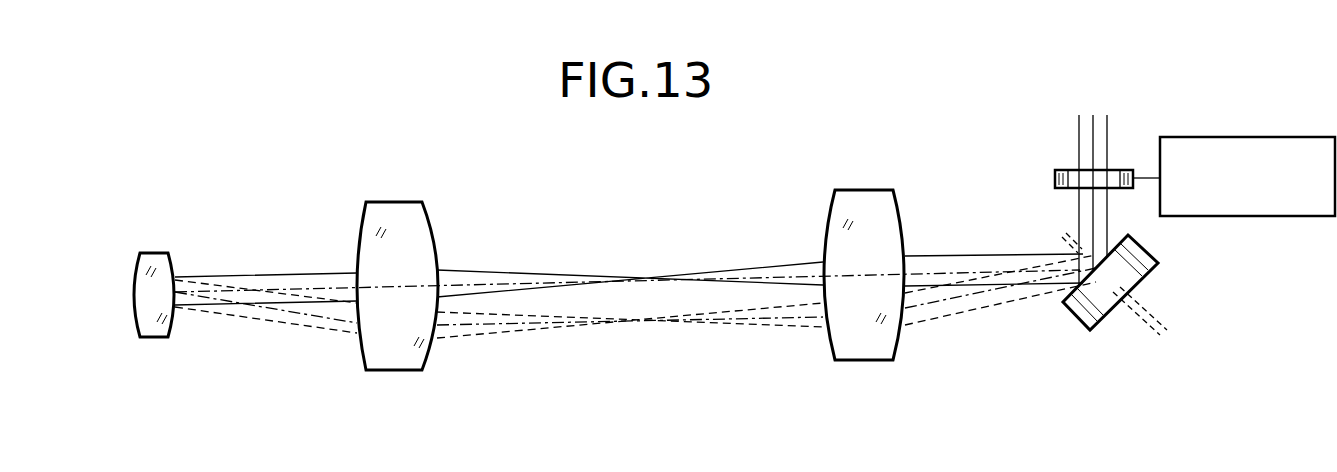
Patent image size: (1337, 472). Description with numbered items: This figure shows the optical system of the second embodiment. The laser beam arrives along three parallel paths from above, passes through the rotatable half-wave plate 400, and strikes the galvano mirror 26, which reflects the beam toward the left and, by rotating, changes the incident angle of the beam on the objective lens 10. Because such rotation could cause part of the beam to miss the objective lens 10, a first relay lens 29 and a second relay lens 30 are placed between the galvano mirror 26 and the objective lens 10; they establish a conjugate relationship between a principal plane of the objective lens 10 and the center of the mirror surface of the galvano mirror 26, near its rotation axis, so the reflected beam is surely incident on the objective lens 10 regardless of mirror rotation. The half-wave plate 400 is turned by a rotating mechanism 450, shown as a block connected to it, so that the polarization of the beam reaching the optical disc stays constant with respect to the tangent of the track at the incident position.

The objective lens 10 is at (162, 262).
The second relay lens 30 is at (402, 217).
The first relay lens 29 is at (862, 202).
The half-wave plate 400 is at (1070, 170).
The rotating mechanism 450 is at (1243, 137).
The galvano mirror 26 is at (1135, 270).